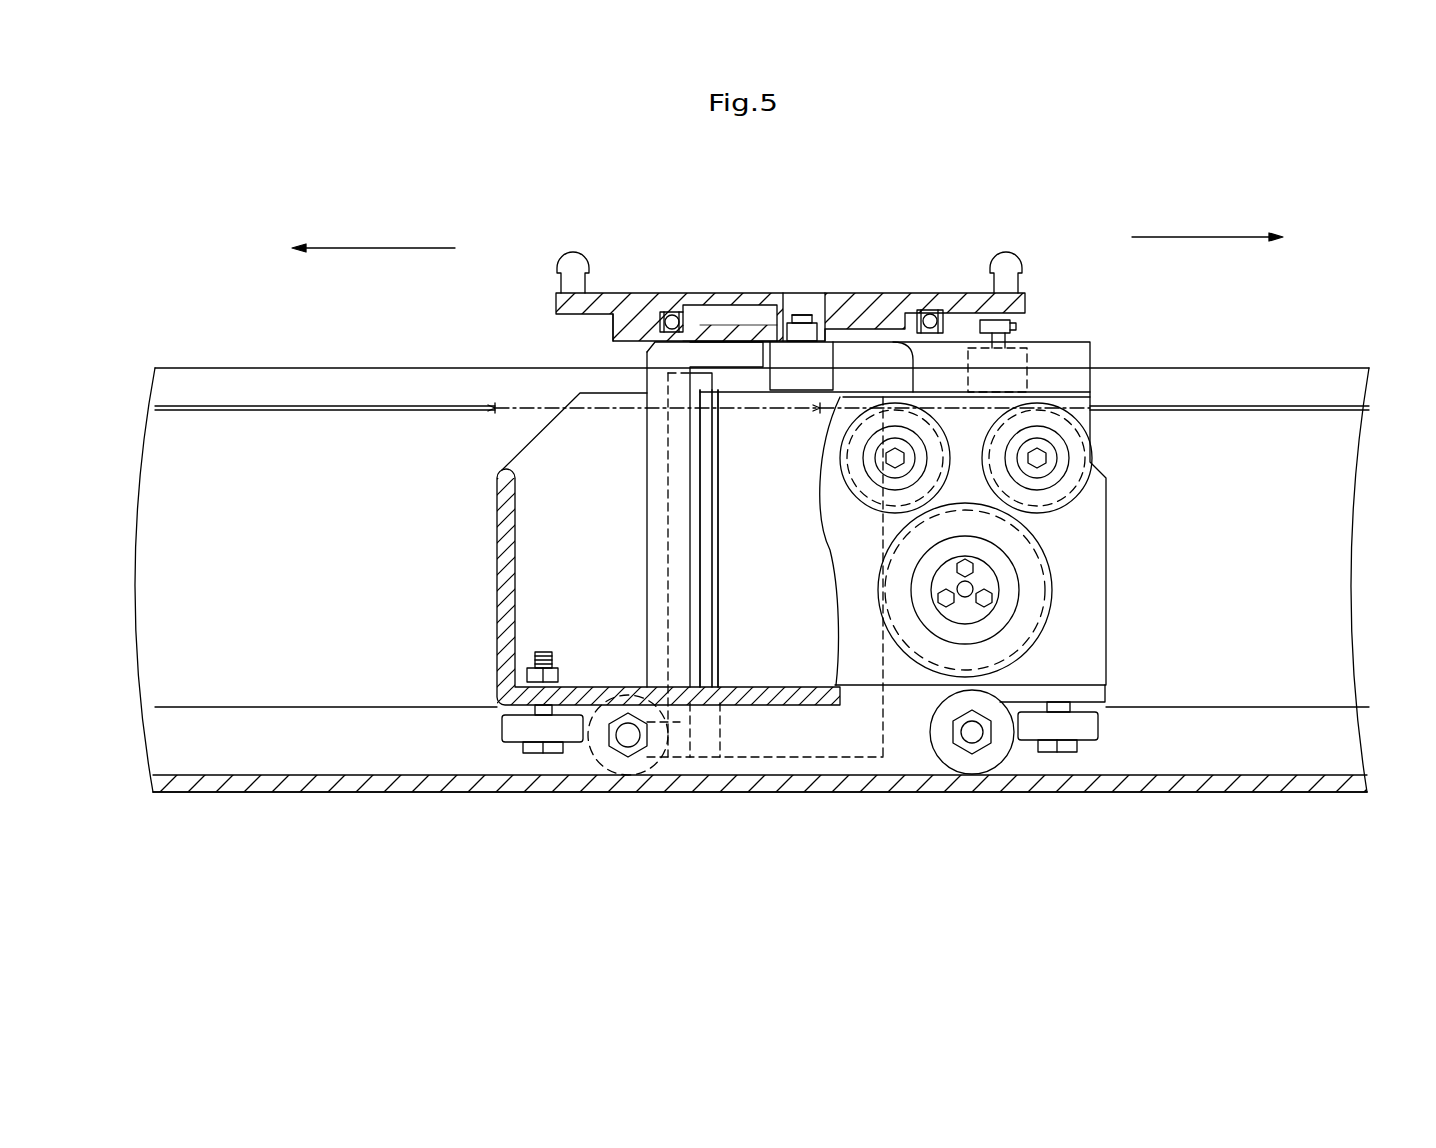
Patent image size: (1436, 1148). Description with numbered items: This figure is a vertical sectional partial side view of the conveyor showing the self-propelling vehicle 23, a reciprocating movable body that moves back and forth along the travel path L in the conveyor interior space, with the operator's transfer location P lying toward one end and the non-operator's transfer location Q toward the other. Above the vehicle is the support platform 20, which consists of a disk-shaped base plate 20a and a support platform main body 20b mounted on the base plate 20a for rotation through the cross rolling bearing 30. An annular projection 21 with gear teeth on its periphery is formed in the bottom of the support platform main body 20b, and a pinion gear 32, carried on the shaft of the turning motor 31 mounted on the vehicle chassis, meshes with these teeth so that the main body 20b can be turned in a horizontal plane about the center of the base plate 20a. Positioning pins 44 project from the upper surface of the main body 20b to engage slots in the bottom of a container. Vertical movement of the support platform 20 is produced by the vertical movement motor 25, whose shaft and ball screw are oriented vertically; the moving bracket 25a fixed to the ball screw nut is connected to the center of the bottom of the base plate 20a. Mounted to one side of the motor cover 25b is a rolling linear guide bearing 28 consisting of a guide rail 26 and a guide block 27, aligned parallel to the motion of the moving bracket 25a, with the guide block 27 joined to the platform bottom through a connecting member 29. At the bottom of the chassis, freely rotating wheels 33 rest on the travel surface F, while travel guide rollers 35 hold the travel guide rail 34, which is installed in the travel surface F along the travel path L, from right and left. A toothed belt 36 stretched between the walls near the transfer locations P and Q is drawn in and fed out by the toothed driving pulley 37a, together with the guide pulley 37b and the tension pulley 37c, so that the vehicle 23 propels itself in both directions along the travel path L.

The support platform 20 is at (655, 269).
The base plate 20a is at (735, 333).
The support platform main body 20b is at (707, 303).
The annular projection 21 is at (623, 328).
The self-propelling vehicle 23 is at (1120, 571).
The vertical movement motor 25 is at (850, 359).
The moving bracket 25a is at (820, 355).
The motor cover 25b is at (728, 629).
The guide rail 26 is at (707, 592).
The guide block 27 is at (697, 470).
The rolling linear guide bearing 28 is at (709, 538).
The connecting member 29 is at (657, 505).
The cross rolling bearing 30 is at (938, 313).
The turning motor 31 is at (1033, 366).
The pinion gear 32 is at (1017, 331).
The freely rotating wheels 33 is at (621, 758).
The travel guide rail 34 is at (1214, 745).
The travel guide rollers 35 is at (518, 732).
The toothed belt 36 is at (1214, 410).
The toothed driving pulley 37a is at (1027, 623).
The guide pulley 37b is at (862, 478).
The tension pulley 37c is at (1073, 480).
The positioning pins 44 is at (565, 276).
The travel surface F is at (289, 762).
The travel path L is at (357, 580).
The operator's transfer location P is at (1217, 239).
The non-operator's transfer location Q is at (363, 249).